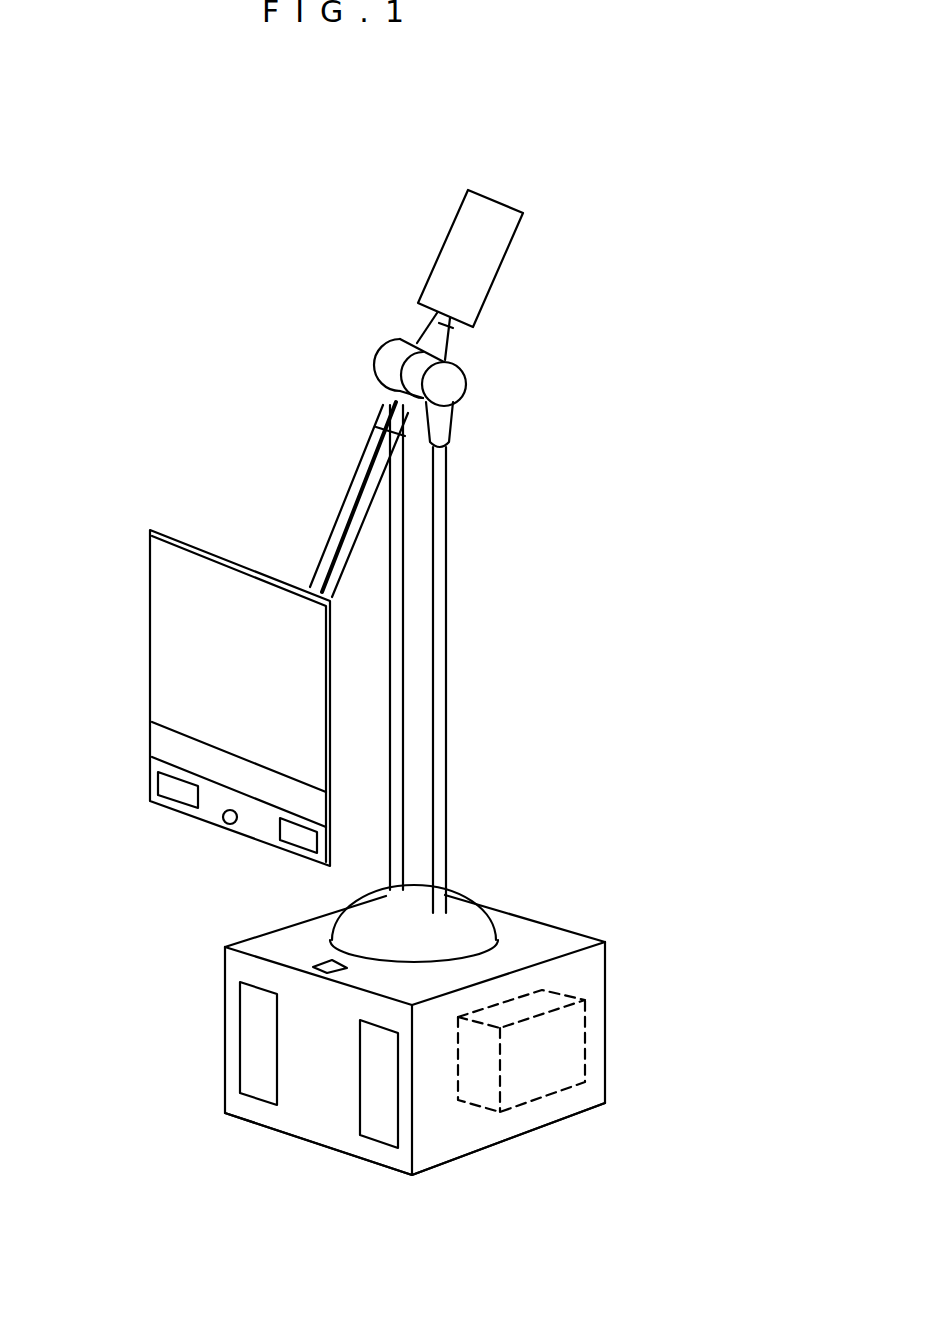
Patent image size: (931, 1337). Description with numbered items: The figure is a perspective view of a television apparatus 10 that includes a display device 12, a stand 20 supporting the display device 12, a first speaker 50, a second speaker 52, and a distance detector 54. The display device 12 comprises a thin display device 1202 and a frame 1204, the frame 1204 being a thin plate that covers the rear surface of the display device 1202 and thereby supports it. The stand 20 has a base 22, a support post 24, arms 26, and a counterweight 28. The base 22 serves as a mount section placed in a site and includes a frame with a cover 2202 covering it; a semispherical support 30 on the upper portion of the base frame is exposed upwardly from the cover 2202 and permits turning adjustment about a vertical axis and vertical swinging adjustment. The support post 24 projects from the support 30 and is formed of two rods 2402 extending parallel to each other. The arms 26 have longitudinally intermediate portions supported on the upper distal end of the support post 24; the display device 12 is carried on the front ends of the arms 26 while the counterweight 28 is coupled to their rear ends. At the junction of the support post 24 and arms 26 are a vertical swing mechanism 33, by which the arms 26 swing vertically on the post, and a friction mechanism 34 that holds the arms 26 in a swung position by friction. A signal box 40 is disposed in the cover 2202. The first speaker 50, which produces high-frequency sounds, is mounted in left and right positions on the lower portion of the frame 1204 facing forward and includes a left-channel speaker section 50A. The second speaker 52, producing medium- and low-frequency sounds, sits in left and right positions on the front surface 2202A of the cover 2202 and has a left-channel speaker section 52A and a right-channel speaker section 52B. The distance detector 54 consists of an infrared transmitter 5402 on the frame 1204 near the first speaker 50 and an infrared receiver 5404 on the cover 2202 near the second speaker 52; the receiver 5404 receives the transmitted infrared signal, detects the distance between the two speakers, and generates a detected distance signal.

The television apparatus 10 is at (648, 222).
The display device 12 is at (97, 567).
The thin display device 1202 is at (167, 653).
The frame 1204 is at (193, 542).
The stand 20 is at (628, 520).
The base 22 is at (359, 1037).
The cover 2202 is at (535, 933).
The front surface 2202A is at (400, 1160).
The support post 24 is at (452, 527).
The rods 2402 is at (398, 568).
The arms 26 is at (353, 461).
The counterweight 28 is at (503, 240).
The semispherical support 30 is at (483, 937).
The vertical swing mechanism 33 is at (481, 372).
The friction mechanism 34 is at (458, 378).
The signal box 40 is at (560, 993).
The first speaker 50 is at (170, 780).
The left-channel speaker section 50A is at (172, 798).
The second speaker 52 is at (253, 1038).
The left-channel speaker section 52A is at (255, 1088).
The right-channel speaker section 52B is at (360, 1105).
The distance detector 54 is at (181, 871).
The infrared transmitter 5402 is at (227, 824).
The infrared receiver 5404 is at (313, 967).